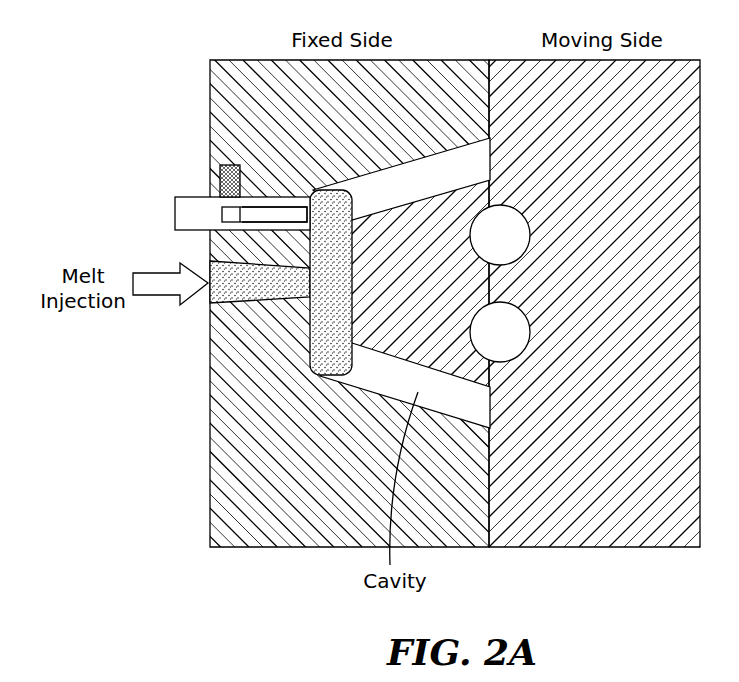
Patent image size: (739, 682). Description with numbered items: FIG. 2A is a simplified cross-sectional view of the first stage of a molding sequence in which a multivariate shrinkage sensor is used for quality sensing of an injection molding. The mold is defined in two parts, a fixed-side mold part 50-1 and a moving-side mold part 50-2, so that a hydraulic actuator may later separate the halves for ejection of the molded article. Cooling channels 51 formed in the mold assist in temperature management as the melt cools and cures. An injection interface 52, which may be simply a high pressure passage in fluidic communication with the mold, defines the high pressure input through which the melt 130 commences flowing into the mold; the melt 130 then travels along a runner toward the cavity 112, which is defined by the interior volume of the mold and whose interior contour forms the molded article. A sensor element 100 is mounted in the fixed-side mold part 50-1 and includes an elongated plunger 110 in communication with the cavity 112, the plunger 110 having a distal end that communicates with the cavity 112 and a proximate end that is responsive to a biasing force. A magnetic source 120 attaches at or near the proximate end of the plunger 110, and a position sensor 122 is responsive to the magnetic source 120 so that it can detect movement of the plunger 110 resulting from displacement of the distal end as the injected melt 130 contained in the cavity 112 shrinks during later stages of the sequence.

The mold part 50-1 is at (315, 548).
The mold part 50-2 is at (578, 547).
The cooling channel 51 is at (487, 245).
The injection interface 52 is at (199, 303).
The sensor element 100 is at (175, 210).
The elongated plunger 110 is at (261, 213).
The cavity 112 is at (418, 183).
The magnetic source 120 is at (203, 197).
The position sensor 122 is at (227, 163).
The melt 130 is at (322, 372).